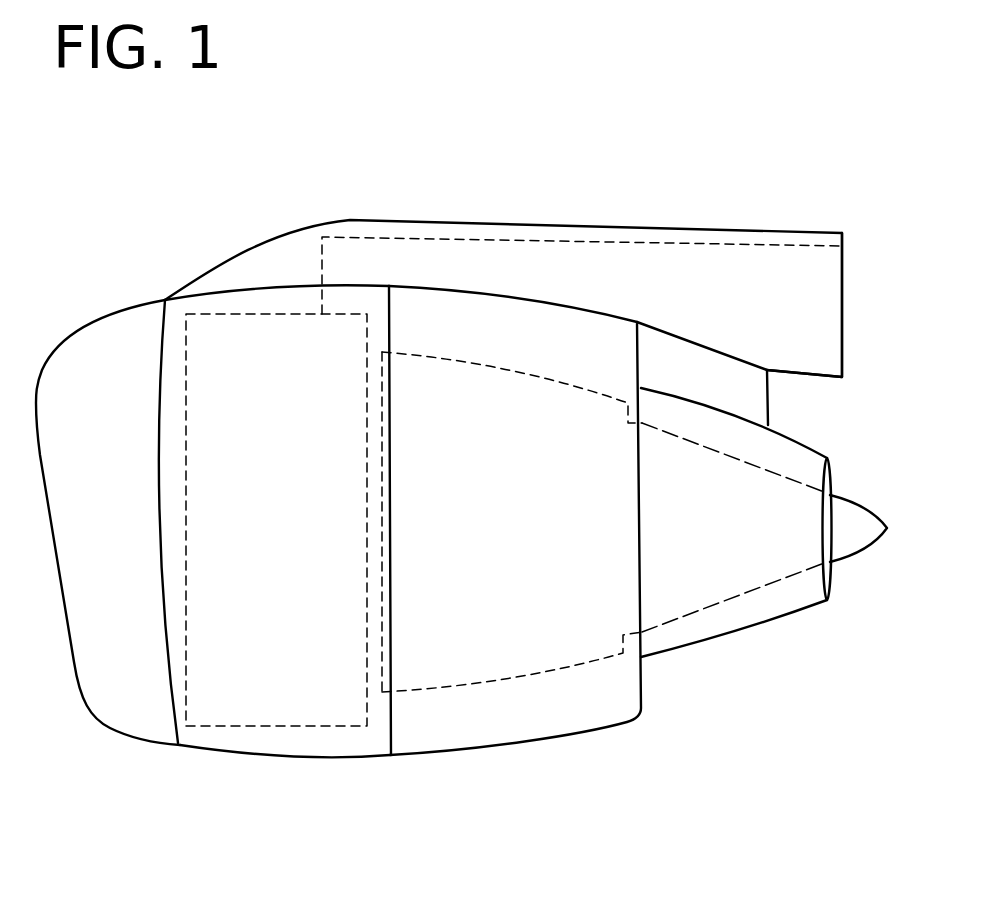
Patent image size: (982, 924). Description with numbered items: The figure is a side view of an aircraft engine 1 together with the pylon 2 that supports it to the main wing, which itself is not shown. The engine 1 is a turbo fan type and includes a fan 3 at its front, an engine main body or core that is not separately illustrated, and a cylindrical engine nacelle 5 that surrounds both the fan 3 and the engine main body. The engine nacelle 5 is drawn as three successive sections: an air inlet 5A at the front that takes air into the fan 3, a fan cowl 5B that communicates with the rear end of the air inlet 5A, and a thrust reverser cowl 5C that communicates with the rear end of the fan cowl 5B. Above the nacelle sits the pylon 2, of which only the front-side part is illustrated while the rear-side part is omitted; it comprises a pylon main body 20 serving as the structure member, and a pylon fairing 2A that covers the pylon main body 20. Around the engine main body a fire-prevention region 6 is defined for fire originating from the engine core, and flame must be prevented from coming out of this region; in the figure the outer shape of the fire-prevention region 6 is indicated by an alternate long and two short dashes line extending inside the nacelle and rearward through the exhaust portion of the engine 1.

The engine 1 is at (533, 123).
The pylon 2 is at (571, 222).
The pylon fairing 2A is at (690, 225).
The pylon main body 20 is at (390, 235).
The fan 3 is at (205, 312).
The engine nacelle 5 is at (498, 866).
The air inlet 5A is at (148, 740).
The fan cowl 5B is at (360, 758).
The thrust reverser cowl 5C is at (529, 745).
The fire-prevention region 6 is at (578, 382).